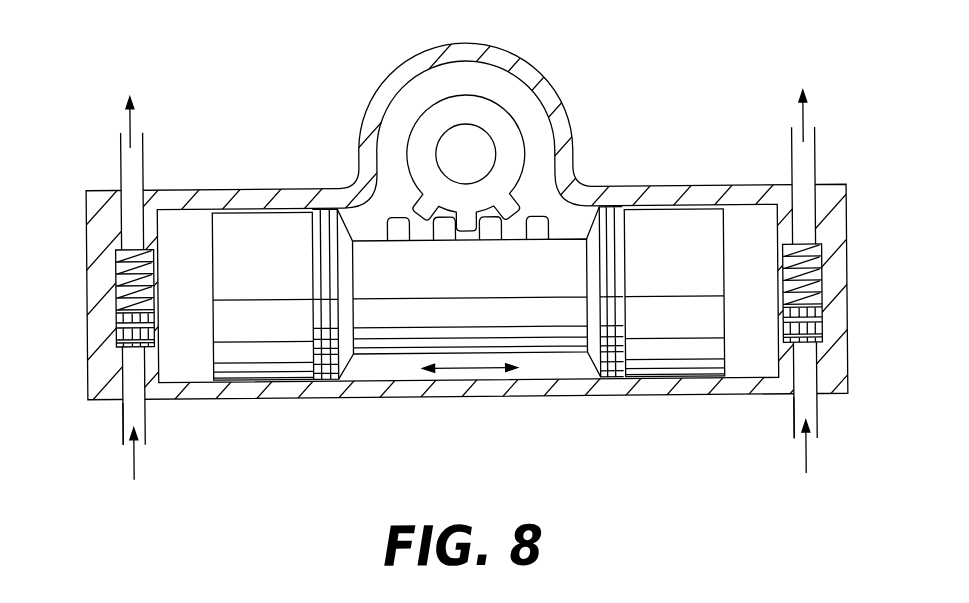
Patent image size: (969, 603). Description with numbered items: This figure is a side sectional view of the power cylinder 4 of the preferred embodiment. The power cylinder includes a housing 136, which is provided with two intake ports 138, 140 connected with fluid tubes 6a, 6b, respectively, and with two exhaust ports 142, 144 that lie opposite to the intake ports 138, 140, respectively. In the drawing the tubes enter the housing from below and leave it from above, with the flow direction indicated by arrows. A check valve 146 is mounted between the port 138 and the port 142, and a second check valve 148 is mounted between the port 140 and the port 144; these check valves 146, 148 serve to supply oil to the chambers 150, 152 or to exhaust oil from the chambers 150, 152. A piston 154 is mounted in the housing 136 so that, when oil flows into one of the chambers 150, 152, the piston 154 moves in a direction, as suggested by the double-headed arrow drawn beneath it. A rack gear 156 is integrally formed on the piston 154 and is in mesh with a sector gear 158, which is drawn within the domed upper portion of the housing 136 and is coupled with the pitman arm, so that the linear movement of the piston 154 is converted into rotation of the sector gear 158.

The power cylinder 4 is at (484, 245).
The fluid tube 6a is at (122, 416).
The fluid tube 6b is at (793, 419).
The housing 136 is at (341, 398).
The intake port 138 is at (143, 436).
The intake port 140 is at (816, 436).
The exhaust port 142 is at (143, 142).
The exhaust port 144 is at (816, 140).
The check valve 146 is at (110, 298).
The check valve 148 is at (832, 270).
The chamber 150 is at (183, 241).
The chamber 152 is at (748, 225).
The piston 154 is at (553, 374).
The rack gear 156 is at (538, 226).
The sector gear 158 is at (412, 130).